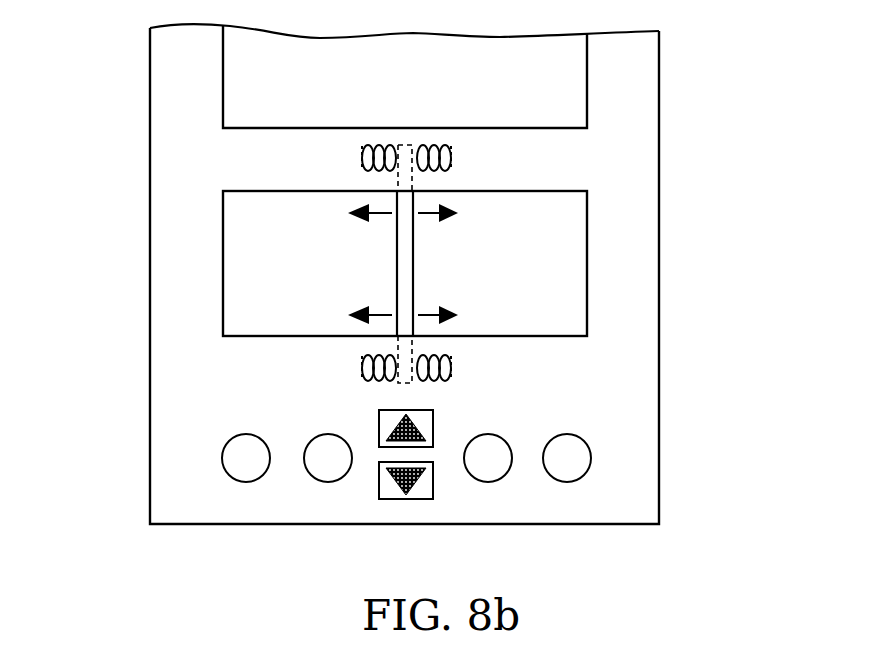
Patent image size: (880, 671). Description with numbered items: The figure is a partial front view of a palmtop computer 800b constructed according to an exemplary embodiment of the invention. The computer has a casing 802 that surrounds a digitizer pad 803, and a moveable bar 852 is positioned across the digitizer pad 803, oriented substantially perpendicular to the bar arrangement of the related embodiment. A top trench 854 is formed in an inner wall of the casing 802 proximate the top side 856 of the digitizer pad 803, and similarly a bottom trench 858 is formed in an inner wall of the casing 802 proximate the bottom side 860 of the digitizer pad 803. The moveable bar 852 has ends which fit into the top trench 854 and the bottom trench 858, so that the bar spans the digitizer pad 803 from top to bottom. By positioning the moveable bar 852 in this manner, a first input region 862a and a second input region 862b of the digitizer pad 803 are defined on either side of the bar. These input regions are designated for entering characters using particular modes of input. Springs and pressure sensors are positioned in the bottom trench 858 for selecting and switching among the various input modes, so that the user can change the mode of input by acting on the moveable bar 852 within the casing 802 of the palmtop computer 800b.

The casing 802 is at (652, 130).
The digitizer pad 803 is at (485, 308).
The moveable bar 852 is at (400, 312).
The top trench 854 is at (362, 146).
The top side 856 is at (253, 193).
The bottom trench 858 is at (365, 381).
The bottom side 860 is at (568, 335).
The first input region 862a is at (245, 312).
The right display portion 862b is at (553, 257).
The palmtop computer 800b is at (702, 505).